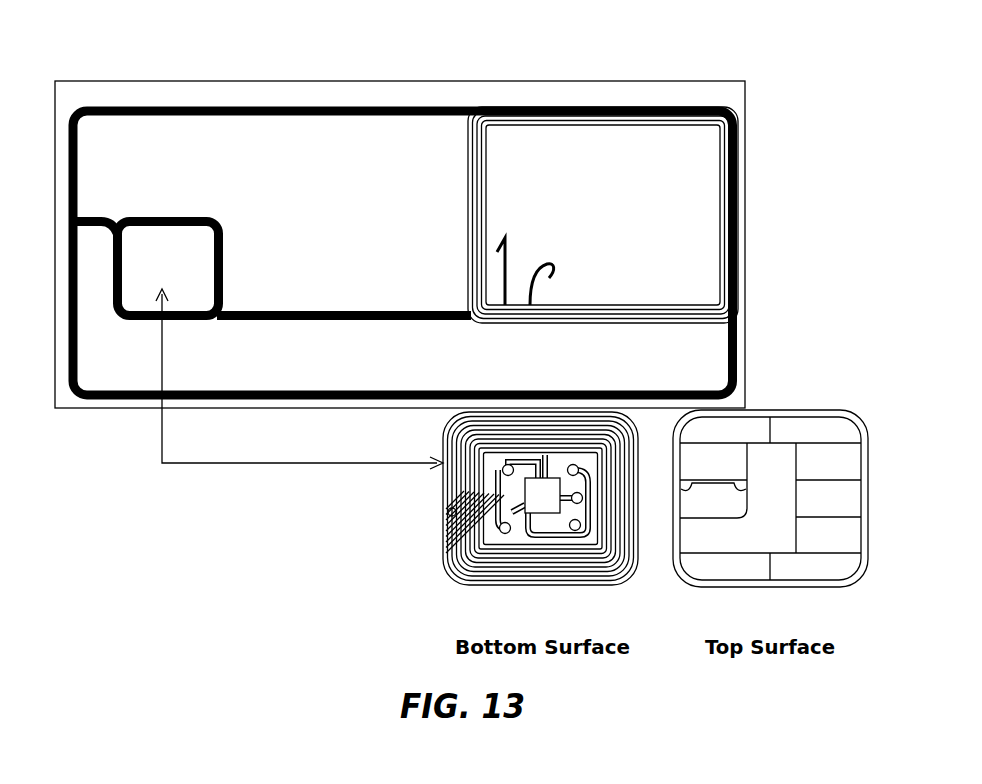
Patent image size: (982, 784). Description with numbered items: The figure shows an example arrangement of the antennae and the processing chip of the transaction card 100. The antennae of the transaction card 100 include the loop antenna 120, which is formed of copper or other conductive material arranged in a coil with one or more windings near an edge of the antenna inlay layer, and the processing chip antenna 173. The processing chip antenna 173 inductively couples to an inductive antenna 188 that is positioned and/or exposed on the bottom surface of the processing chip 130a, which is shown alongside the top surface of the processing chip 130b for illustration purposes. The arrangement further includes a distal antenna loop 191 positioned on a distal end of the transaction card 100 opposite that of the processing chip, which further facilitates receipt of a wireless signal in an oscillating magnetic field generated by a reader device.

The transaction card 100 is at (610, 81).
The loop antenna 120 is at (302, 108).
The processing chip antenna 173 is at (175, 218).
The distal antenna loop 191 is at (468, 225).
The processing chip bottom surface 130a is at (520, 517).
The processing chip top surface 130b is at (755, 587).
The inductive antenna 188 is at (438, 558).